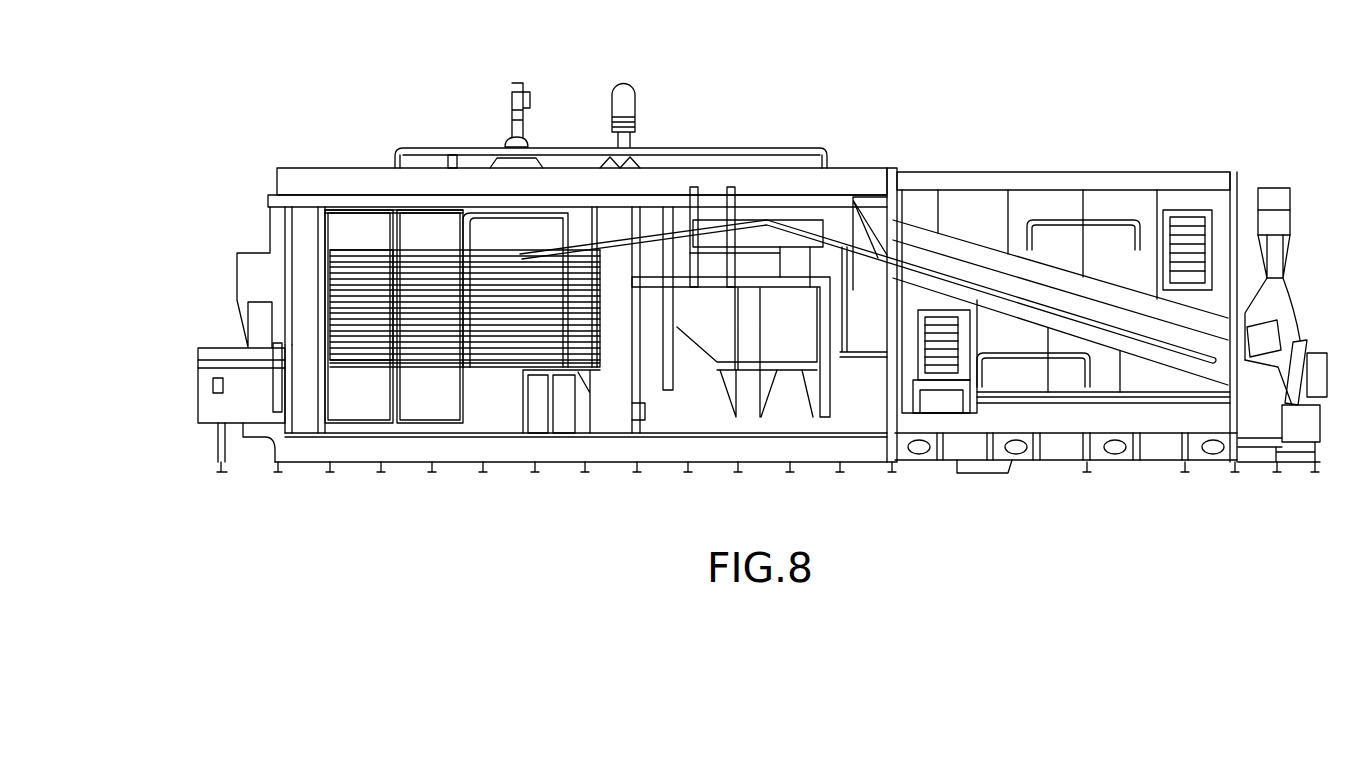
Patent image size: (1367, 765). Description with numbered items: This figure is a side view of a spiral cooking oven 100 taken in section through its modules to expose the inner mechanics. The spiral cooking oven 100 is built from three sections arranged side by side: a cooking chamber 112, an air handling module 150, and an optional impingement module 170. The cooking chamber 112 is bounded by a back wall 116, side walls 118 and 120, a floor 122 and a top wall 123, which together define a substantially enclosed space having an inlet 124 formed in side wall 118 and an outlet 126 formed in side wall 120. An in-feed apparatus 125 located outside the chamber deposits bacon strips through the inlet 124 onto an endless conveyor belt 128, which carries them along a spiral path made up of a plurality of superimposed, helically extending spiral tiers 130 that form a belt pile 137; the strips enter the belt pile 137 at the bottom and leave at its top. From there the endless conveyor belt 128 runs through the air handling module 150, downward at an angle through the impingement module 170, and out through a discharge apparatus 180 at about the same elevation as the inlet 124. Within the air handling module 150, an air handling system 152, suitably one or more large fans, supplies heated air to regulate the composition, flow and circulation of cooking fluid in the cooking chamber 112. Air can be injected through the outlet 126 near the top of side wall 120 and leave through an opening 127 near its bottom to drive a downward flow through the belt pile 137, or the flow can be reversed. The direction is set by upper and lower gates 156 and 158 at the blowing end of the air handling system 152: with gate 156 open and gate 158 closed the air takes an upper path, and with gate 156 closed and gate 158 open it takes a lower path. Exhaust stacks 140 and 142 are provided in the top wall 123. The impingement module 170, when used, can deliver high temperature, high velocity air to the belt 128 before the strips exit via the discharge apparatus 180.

The spiral cooking oven 100 is at (872, 140).
The cooking chamber 112 is at (330, 167).
The back wall 116 is at (372, 243).
The side wall 118 is at (295, 262).
The side wall 120 is at (630, 346).
The floor 122 is at (475, 430).
The top wall 123 is at (407, 210).
The inlet 124 is at (290, 360).
The in-feed apparatus 125 is at (197, 397).
The outlet 126 is at (627, 248).
The opening 127 is at (640, 407).
The endless conveyor belt 128 is at (563, 250).
The spiral tiers 130 is at (406, 347).
The belt pile 137 is at (343, 332).
The exhaust stack 140 is at (512, 97).
The exhaust stack 142 is at (613, 86).
The air handling module 150 is at (733, 170).
The air handling system 152 is at (790, 386).
The upper gate 156 is at (880, 215).
The lower gate 158 is at (872, 361).
The impingement module 170 is at (1065, 172).
The discharge apparatus 180 is at (1288, 357).